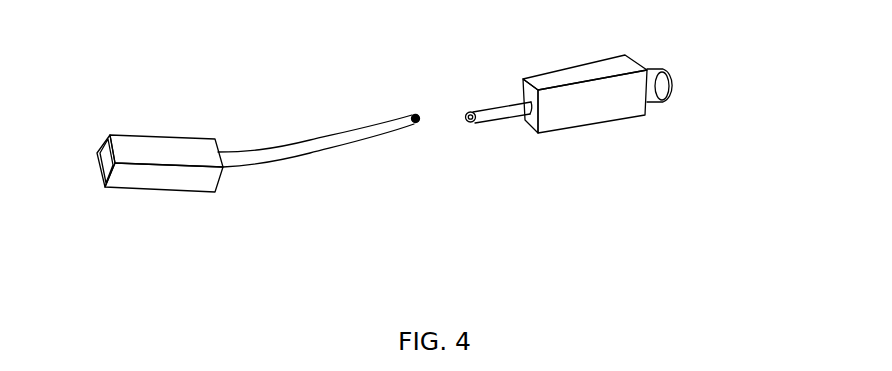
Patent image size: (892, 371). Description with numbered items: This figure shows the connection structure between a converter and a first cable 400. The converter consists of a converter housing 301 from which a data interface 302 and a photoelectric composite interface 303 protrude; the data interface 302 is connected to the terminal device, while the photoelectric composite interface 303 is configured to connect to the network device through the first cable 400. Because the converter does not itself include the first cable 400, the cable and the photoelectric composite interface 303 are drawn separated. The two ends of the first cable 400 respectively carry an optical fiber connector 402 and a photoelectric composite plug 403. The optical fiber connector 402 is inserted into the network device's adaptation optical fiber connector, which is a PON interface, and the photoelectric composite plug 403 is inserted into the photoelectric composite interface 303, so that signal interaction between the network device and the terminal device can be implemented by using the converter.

The first cable 400 is at (308, 153).
The optical fiber connector 402 is at (160, 152).
The photoelectric composite plug 403 is at (416, 117).
The converter housing 301 is at (597, 110).
The data interface 302 is at (655, 90).
The photoelectric composite interface 303 is at (470, 112).